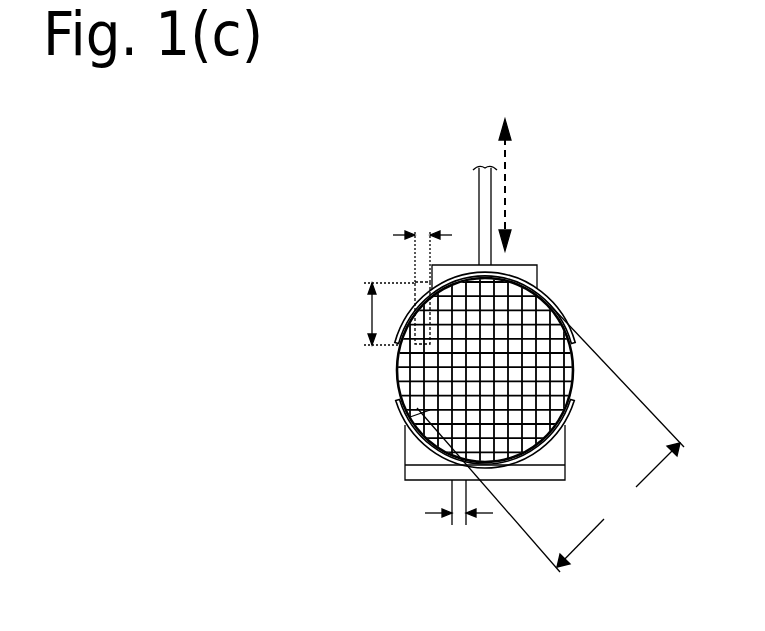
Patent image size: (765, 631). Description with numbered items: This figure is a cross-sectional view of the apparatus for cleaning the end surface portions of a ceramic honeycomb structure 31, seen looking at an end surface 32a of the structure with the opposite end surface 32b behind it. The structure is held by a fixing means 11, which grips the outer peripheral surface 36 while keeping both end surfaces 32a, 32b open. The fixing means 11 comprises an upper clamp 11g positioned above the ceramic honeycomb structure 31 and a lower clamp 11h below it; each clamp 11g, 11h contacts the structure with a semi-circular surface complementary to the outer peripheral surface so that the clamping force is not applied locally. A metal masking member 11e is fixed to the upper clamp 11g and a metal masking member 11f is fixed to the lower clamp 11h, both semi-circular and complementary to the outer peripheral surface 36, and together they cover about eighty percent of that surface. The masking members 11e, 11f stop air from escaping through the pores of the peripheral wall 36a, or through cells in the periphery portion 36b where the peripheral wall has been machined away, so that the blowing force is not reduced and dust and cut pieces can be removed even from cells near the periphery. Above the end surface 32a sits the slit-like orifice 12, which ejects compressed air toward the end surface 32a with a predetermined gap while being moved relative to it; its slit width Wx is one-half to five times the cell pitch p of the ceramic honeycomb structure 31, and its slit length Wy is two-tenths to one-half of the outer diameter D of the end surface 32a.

The fixing means 11 is at (596, 210).
The masking member 11e is at (555, 306).
The masking member 11f is at (574, 404).
The clamp 11g is at (522, 272).
The clamp 11h is at (558, 456).
The slit-like orifice 12 is at (413, 292).
The ceramic honeycomb structure 31 is at (578, 373).
The end surface 32a is at (402, 428).
The end surface 32b is at (445, 471).
The outer peripheral surface 36 is at (393, 370).
The peripheral wall 36a is at (482, 370).
The periphery portion 36b is at (482, 370).